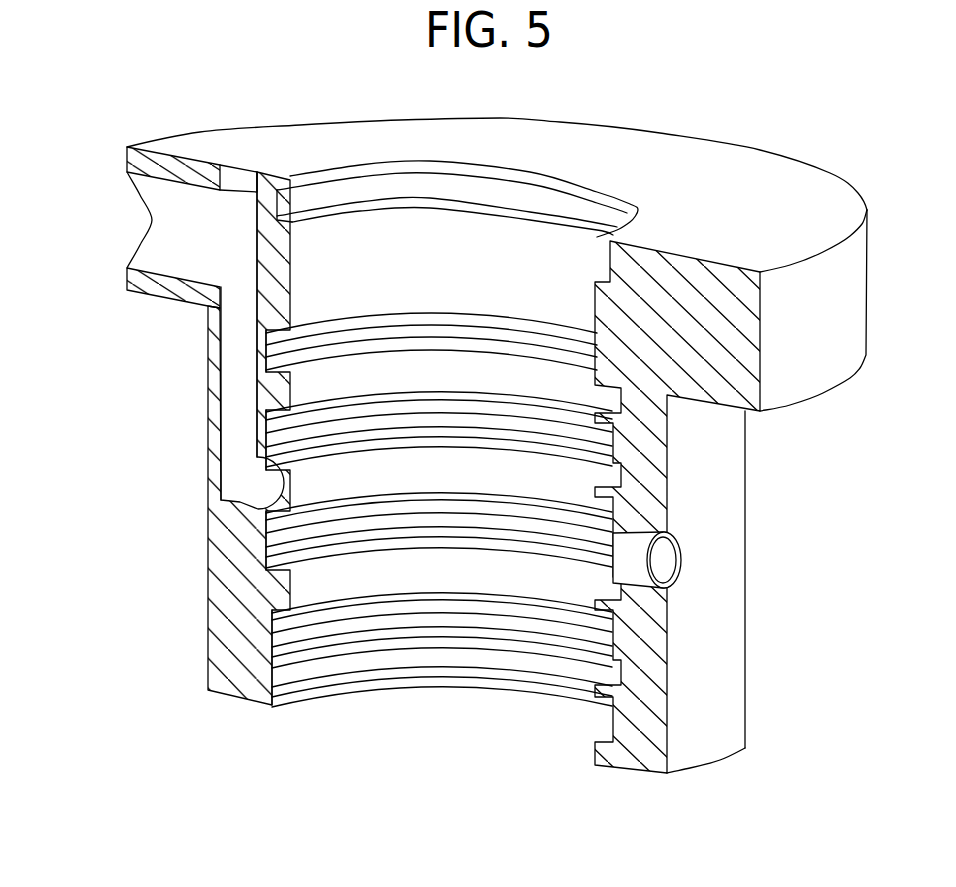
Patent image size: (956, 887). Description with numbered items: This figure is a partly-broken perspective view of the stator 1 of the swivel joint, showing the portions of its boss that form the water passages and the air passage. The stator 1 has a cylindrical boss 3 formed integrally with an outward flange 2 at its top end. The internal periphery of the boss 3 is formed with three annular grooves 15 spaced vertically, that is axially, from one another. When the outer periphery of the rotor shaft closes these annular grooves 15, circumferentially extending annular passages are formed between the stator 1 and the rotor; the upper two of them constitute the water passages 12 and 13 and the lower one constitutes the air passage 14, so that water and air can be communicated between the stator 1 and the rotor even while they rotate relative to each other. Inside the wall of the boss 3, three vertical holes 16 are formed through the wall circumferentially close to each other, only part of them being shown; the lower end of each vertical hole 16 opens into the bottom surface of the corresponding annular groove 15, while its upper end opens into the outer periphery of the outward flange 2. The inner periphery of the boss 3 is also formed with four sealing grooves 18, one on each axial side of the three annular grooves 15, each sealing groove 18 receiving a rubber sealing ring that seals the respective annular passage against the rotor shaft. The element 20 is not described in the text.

The stator 1 is at (198, 132).
The outward flange 2 is at (128, 158).
The cylindrical boss 3 is at (208, 625).
The water passage 12 is at (435, 373).
The water passage 13 is at (412, 474).
The air passage 14 is at (372, 575).
The annular groove 15 is at (276, 398).
The vertical hole 16 is at (226, 342).
The sealing groove 18 is at (376, 420).
The pin 20 is at (668, 558).